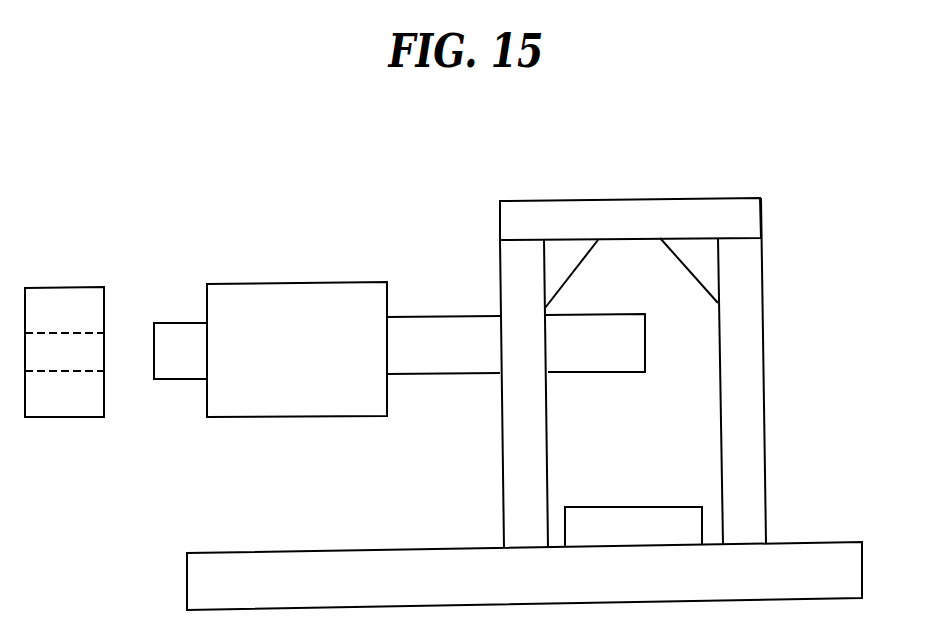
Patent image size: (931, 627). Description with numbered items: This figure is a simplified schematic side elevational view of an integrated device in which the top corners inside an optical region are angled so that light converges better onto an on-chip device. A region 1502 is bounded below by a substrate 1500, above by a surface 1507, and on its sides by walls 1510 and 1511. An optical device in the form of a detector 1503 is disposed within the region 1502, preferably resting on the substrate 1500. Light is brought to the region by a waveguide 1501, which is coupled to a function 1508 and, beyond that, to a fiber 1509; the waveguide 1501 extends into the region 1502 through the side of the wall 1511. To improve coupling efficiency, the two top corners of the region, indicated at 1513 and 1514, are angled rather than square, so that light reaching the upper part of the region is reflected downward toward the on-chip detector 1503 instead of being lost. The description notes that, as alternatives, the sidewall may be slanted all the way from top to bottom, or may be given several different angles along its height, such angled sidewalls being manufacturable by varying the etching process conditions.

The substrate 1500 is at (502, 588).
The waveguide 1501 is at (468, 358).
The region 1502 is at (658, 435).
The detector 1503 is at (657, 535).
The surface 1507 is at (647, 225).
The function 1508 is at (323, 358).
The fiber 1509 is at (88, 360).
The wall 1510 is at (742, 352).
The wall 1511 is at (520, 281).
The angled top corner 1513 is at (570, 248).
The angled top corner 1514 is at (697, 252).